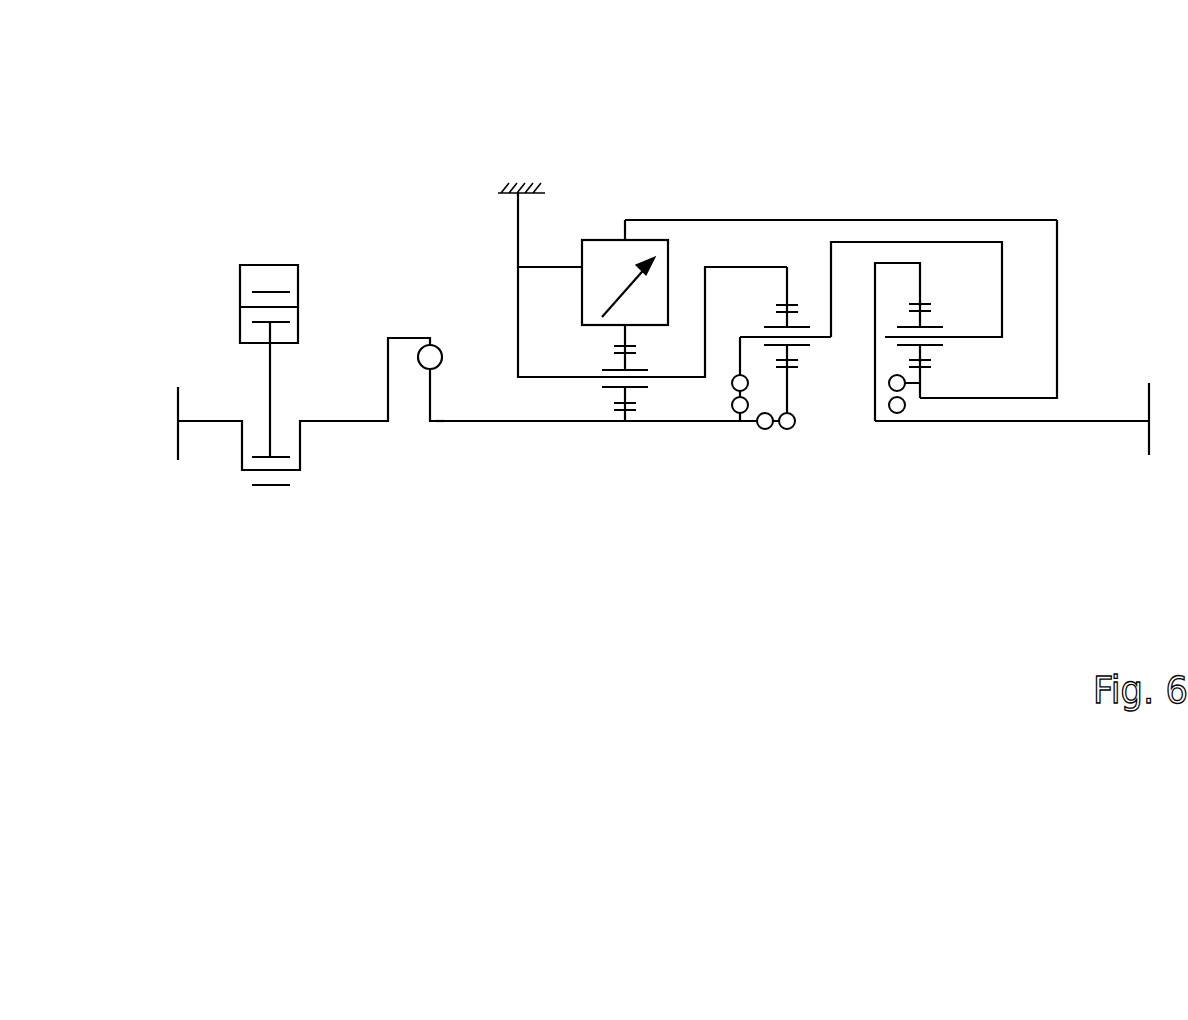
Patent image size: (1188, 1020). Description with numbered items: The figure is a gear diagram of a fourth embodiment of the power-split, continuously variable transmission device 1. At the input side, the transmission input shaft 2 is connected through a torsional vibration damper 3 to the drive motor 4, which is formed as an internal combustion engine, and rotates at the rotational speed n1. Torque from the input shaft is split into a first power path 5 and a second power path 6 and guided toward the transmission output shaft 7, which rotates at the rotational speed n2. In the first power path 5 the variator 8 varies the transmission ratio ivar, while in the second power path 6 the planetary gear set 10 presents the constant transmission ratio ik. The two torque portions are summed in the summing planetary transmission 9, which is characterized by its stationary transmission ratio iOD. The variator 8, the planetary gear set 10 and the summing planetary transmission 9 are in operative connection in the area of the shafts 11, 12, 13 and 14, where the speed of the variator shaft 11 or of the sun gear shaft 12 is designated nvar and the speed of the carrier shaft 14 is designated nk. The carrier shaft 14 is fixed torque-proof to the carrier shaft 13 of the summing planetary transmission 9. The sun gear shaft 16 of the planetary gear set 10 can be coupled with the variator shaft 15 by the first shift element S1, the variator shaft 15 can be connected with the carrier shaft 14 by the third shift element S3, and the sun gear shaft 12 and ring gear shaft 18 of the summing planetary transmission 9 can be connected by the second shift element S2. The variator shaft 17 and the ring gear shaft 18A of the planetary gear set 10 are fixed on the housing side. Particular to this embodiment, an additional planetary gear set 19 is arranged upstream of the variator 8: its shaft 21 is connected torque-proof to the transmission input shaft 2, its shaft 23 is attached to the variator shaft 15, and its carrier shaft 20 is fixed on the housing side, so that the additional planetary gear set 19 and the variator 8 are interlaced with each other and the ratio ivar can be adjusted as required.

The transmission device 1 is at (303, 207).
The transmission input shaft 2 is at (478, 257).
The torsional vibration damper 3 is at (306, 491).
The drive motor 4 is at (232, 265).
The first power path 5 is at (558, 167).
The second power path 6 is at (788, 490).
The transmission output shaft 7 is at (1012, 510).
The variator 8 is at (624, 185).
The summing planetary transmission 9 is at (918, 203).
The additional planetary gear set 10 is at (788, 200).
The shaft of the variator 11 is at (841, 132).
The shaft of the summing planetary transmission 12 is at (988, 428).
The shaft of the summing planetary transmission 13 is at (995, 187).
The shaft of the planetary gear set 14 is at (658, 487).
The shaft of the variator 15 is at (507, 233).
The shaft of the planetary gear set 16 is at (837, 515).
The shaft of the variator 17 is at (611, 211).
The shaft of the summing planetary transmission 18 is at (914, 233).
The shaft of the planetary gear set 18A is at (785, 229).
The additional planetary gear set 19 is at (625, 200).
The shaft of the additional planetary gear set 20 is at (411, 507).
The shaft of the additional planetary gear set 21 is at (567, 529).
The shaft of the additional planetary gear set 23 is at (492, 489).
The rotational speed of the transmission input shaft n1 is at (379, 529).
The rotational speed of the transmission output shaft n2 is at (1069, 529).
The rotational speed of the variator shaft nvar is at (725, 131).
The rotational speed of the carrier shaft nk is at (916, 191).
The first shift element S1 is at (752, 525).
The second shift element S2 is at (914, 506).
The third shift element S3 is at (695, 506).
The transmission ratio of the first power path ivar is at (627, 459).
The constant transmission ratio ik is at (790, 459).
The stationary transmission ratio iOD is at (926, 460).